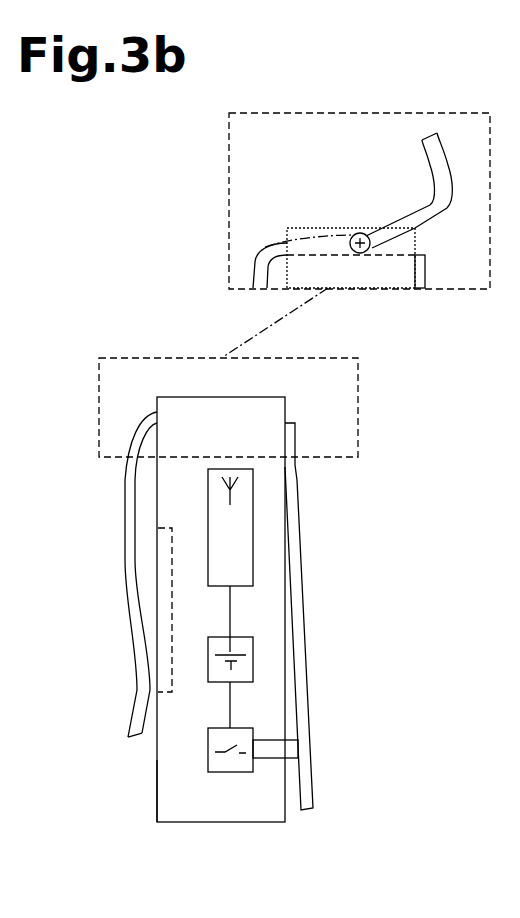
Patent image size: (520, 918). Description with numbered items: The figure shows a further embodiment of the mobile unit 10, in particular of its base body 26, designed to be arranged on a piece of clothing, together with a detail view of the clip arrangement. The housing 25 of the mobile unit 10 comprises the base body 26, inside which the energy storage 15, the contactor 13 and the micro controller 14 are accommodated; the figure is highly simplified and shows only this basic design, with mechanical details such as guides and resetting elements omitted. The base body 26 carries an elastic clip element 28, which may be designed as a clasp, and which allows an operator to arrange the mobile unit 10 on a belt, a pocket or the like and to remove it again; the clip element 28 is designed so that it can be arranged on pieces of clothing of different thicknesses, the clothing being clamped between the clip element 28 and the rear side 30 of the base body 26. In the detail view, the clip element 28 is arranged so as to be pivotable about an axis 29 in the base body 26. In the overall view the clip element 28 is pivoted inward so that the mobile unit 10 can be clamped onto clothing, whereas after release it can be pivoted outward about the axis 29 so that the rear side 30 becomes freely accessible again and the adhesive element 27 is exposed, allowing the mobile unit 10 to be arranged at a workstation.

The mobile unit 10 is at (80, 362).
The contactor 13 is at (228, 762).
The micro controller 14 is at (240, 522).
The energy storage 15 is at (242, 670).
The housing 25 is at (322, 837).
The base body 26 is at (180, 810).
The adhesive element 27 is at (163, 630).
The clip element 28 is at (145, 415).
The axis 29 is at (360, 238).
The rear side 30 is at (157, 795).